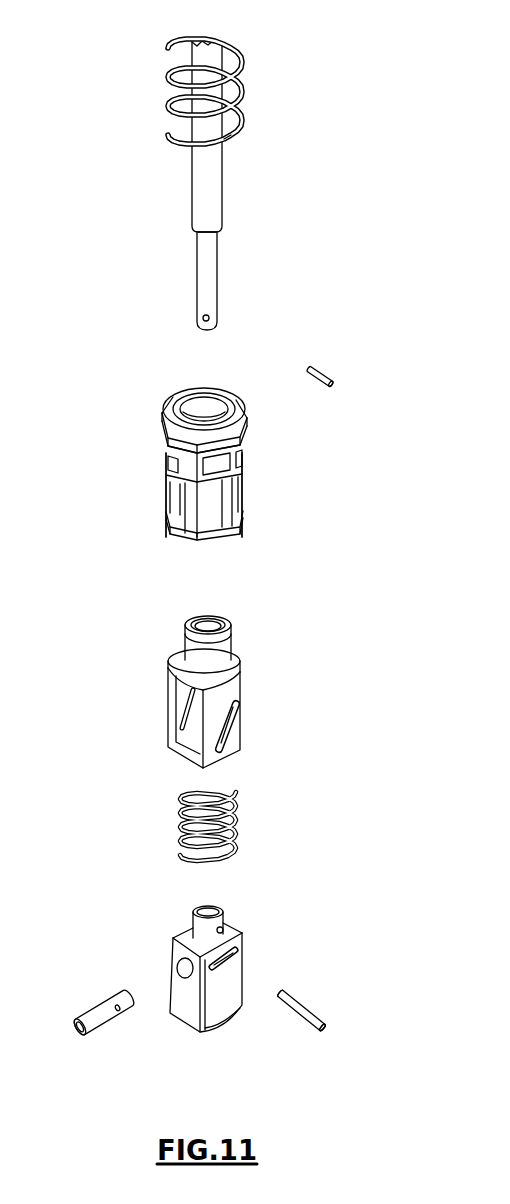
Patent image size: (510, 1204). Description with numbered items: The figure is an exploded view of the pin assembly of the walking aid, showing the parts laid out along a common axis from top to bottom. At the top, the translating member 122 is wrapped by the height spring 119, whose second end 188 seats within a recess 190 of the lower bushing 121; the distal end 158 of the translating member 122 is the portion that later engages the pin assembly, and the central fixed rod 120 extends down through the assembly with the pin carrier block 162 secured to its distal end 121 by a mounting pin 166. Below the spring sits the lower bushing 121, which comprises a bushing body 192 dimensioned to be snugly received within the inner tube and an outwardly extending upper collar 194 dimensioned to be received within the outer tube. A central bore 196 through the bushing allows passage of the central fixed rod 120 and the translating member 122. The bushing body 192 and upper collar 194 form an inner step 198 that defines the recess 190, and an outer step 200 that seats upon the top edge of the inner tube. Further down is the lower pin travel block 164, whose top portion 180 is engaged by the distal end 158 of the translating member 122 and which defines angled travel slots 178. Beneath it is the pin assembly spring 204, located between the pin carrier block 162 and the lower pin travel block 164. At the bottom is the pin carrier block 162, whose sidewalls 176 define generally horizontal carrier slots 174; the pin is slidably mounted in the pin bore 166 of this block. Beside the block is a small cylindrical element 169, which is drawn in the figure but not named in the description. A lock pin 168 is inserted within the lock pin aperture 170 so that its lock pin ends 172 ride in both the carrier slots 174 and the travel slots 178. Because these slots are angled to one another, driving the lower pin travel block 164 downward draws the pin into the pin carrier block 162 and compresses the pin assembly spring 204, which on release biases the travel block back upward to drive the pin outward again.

The height spring 119 is at (243, 101).
The second end 188 is at (240, 130).
The translating member 122 is at (218, 188).
The distal end 158 is at (218, 230).
The central fixed rod 120 is at (217, 288).
The lower bushing 121 is at (215, 329).
The recess 190 is at (216, 434).
The central bore 196 is at (212, 412).
The inner step 198 is at (237, 395).
The upper collar 194 is at (247, 419).
The outer step 200 is at (248, 432).
The bushing body 192 is at (187, 476).
The mounting pin 166 is at (262, 684).
The top portion 180 is at (210, 612).
The lower pin travel block 164 is at (247, 670).
The travel slots 178 is at (237, 717).
The pin assembly spring 204 is at (233, 793).
The carrier slots 174 is at (242, 950).
The pin carrier block 162 is at (259, 972).
The sidewalls 176 is at (223, 988).
The sleeve 169 is at (109, 1037).
The lock pin aperture 170 is at (118, 1017).
The lock pin 168 is at (312, 1015).
The lock pin ends 172 is at (278, 989).